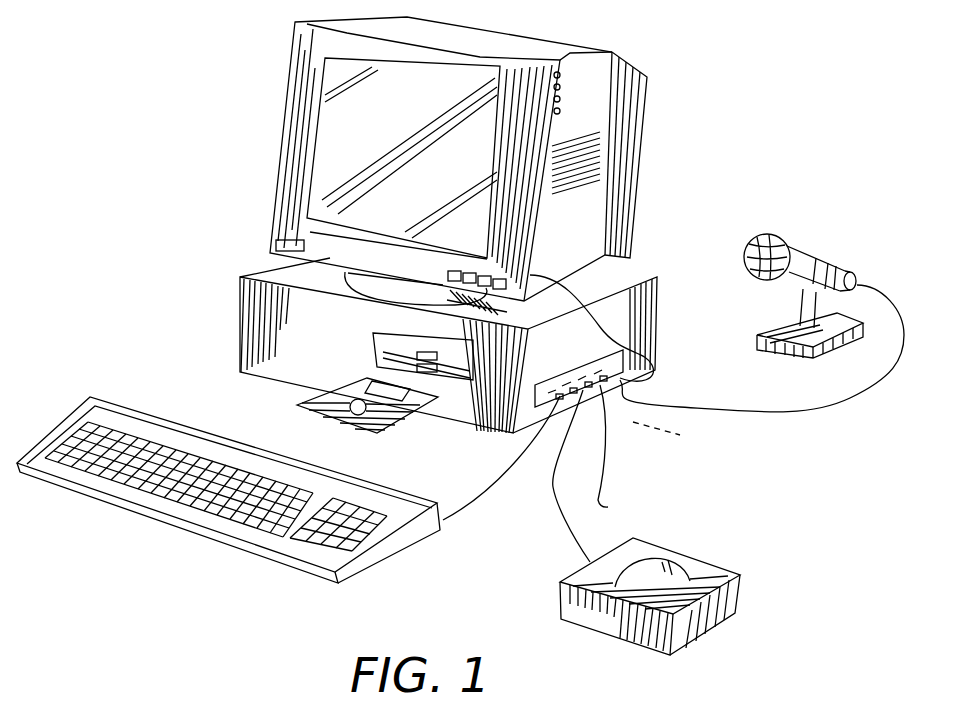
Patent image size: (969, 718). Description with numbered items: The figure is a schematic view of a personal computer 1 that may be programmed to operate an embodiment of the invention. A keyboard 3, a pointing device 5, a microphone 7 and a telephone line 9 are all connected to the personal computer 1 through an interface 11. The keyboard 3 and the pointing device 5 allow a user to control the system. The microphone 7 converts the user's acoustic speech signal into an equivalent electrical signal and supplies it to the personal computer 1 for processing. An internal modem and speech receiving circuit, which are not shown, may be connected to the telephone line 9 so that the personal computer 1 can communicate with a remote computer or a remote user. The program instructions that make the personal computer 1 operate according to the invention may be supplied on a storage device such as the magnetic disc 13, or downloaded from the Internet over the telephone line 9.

The personal computer 1 is at (300, 88).
The keyboard 3 is at (167, 505).
The pointing device 5 is at (632, 624).
The microphone 7 is at (813, 253).
The telephone line 9 is at (613, 379).
The interface 11 is at (617, 451).
The magnetic disc 13 is at (300, 406).